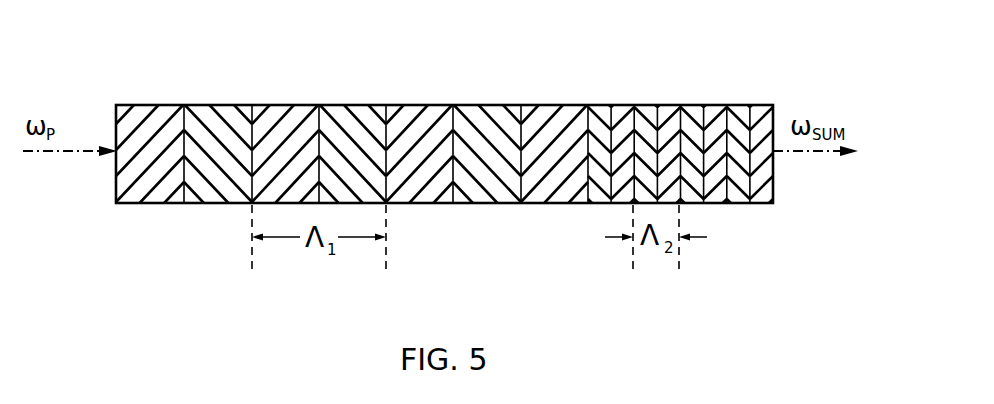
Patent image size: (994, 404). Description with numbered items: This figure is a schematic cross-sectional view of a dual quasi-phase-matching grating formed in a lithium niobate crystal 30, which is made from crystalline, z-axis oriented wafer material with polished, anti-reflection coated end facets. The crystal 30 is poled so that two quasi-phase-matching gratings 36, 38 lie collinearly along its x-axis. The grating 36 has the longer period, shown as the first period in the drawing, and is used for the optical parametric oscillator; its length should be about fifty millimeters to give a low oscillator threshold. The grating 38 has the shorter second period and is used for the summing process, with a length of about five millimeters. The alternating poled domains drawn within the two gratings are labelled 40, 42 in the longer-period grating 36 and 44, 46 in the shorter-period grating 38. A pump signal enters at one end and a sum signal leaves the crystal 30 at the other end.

The LiNbO3 crystal 30 is at (165, 236).
The quasi-phase-matching grating 36 is at (352, 153).
The quasi-phase-matching grating 38 is at (684, 154).
The domain of first polarization in region 36 40 is at (423, 205).
The domain of second polarization in region 36 42 is at (495, 191).
The domain of first polarization in region 38 44 is at (707, 204).
The domain of second polarization in region 38 46 is at (742, 204).